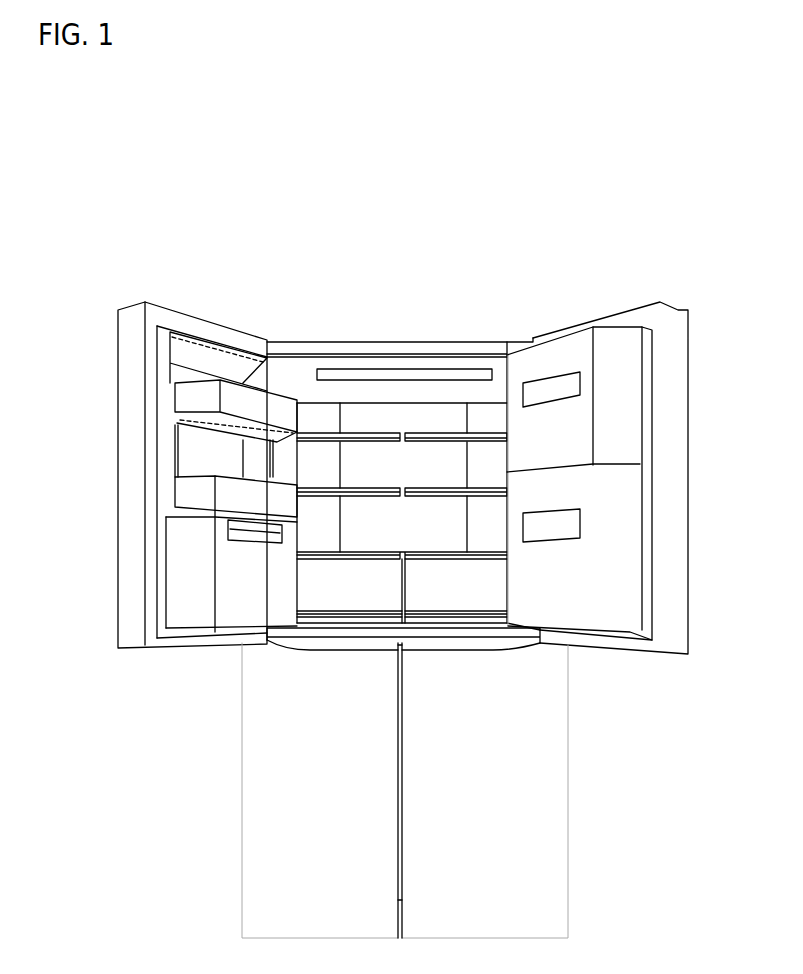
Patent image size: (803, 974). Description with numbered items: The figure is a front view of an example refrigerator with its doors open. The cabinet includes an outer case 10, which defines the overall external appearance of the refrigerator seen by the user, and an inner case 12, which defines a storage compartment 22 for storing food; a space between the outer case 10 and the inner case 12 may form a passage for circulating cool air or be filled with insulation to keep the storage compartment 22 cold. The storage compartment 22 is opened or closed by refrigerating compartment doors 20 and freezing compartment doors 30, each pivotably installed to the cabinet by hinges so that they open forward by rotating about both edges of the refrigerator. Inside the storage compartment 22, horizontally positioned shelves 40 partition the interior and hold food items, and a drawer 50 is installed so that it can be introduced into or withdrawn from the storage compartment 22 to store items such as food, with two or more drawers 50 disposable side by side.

The outer case 10 is at (288, 340).
The inner case 12 is at (449, 363).
The refrigerating compartment door 20 is at (130, 314).
The storage compartment 22 is at (360, 406).
The freezing compartment door 30 is at (545, 768).
The shelf 40 is at (313, 555).
The drawer 50 is at (303, 583).